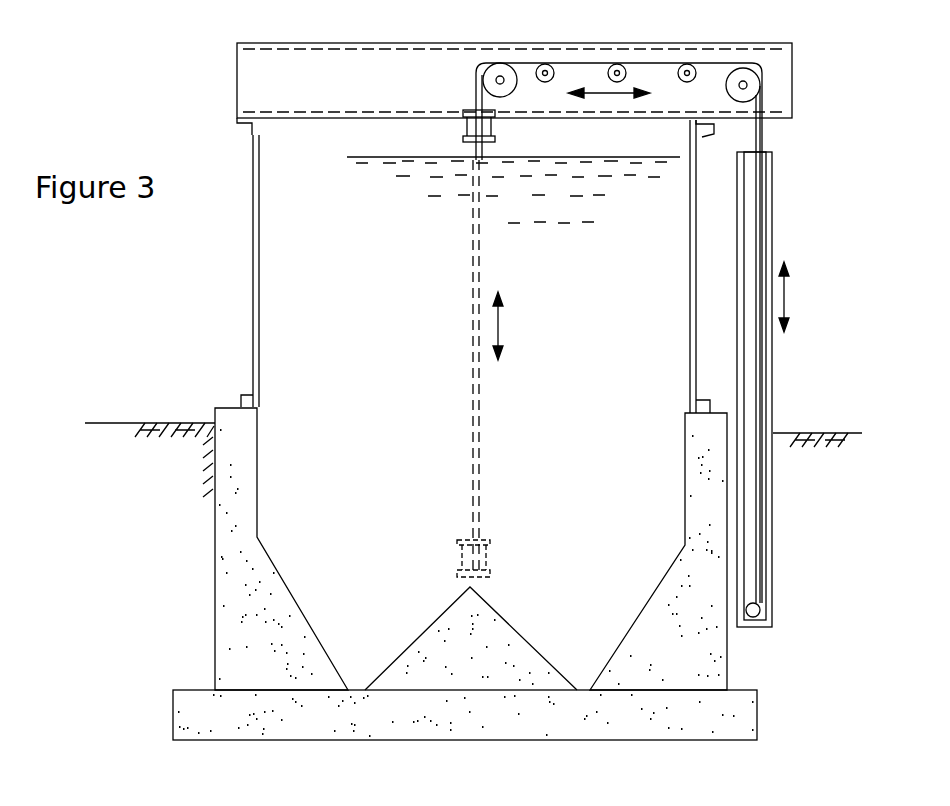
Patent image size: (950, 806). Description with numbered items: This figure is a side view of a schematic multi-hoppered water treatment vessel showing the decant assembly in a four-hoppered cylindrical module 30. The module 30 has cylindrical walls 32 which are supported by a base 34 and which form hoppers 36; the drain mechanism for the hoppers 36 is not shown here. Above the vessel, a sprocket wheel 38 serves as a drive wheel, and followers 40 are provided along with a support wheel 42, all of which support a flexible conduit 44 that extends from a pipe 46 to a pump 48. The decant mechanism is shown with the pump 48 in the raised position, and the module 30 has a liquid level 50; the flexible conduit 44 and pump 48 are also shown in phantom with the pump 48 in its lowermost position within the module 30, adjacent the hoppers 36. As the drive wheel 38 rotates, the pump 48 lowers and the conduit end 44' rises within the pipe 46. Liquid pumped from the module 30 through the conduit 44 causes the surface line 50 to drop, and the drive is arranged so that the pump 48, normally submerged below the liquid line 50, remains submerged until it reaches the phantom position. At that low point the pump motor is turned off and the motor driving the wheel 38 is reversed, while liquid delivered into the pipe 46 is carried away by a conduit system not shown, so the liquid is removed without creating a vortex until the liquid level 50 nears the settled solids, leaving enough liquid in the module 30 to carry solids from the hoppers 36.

The cylindrical module 30 is at (226, 307).
The cylindrical walls 32 is at (255, 237).
The base 34 is at (215, 572).
The hoppers 36 is at (373, 645).
The sprocket wheel 38 is at (741, 70).
The followers 40 is at (686, 63).
The support wheel 42 is at (495, 72).
The flexible conduit 44 is at (664, 328).
The conduit end 44' is at (790, 599).
The pipe 46 is at (774, 368).
The pump 48 is at (462, 123).
The liquid level 50 is at (586, 152).